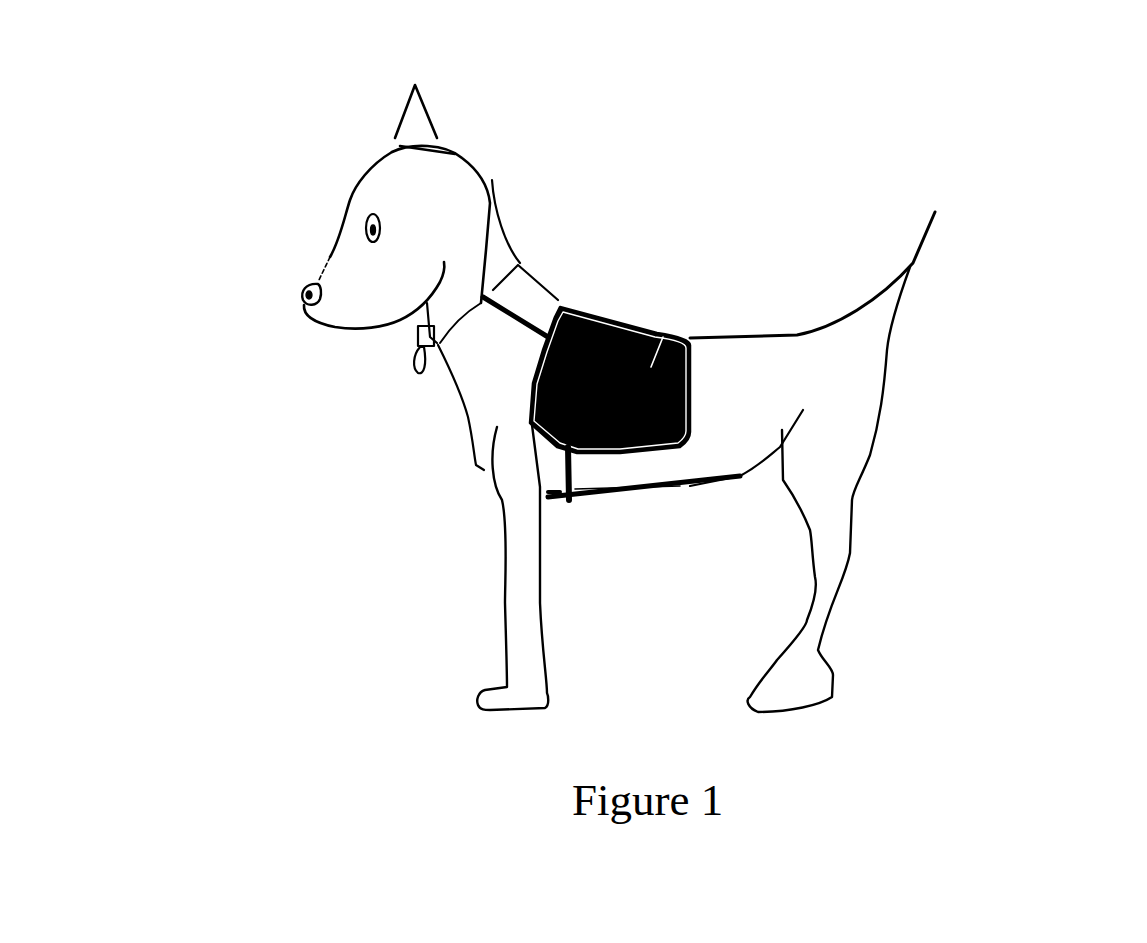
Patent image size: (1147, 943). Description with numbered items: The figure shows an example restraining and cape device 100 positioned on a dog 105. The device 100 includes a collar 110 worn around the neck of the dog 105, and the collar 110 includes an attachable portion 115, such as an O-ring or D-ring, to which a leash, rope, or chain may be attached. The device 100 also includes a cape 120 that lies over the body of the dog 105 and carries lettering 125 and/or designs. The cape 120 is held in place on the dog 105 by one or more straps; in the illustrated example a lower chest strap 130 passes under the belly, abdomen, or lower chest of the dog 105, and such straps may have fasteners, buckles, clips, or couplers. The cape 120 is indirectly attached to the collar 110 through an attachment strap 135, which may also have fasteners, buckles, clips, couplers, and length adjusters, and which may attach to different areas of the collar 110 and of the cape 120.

The restraining and cape device 100 is at (763, 112).
The dog 105 is at (857, 362).
The collar 110 is at (490, 203).
The attachable portion 115 is at (413, 372).
The cape 120 is at (613, 455).
The lettering 125 is at (663, 333).
The lower chest strap 130 is at (570, 500).
The attachment strap 135 is at (513, 320).